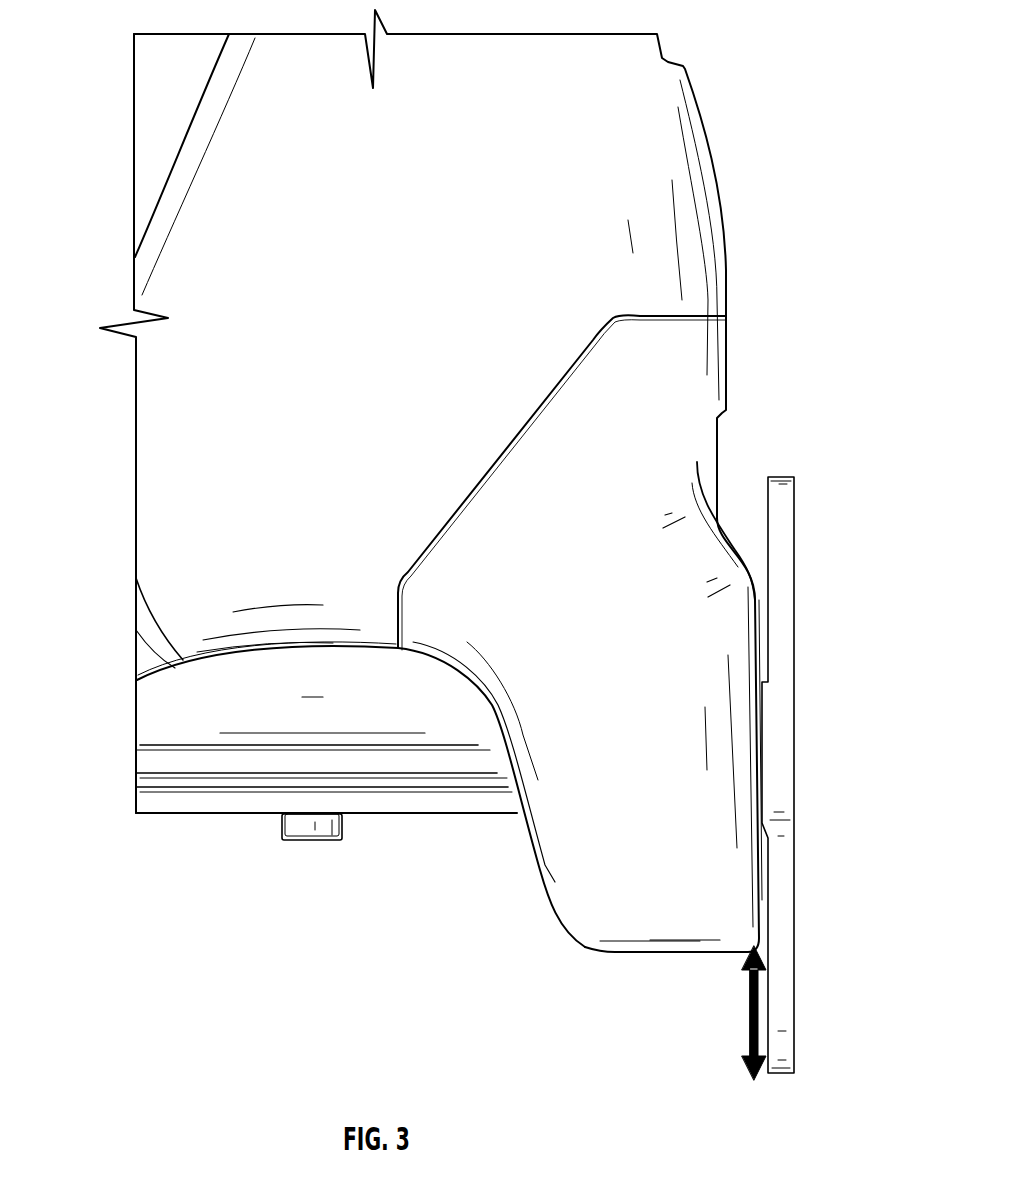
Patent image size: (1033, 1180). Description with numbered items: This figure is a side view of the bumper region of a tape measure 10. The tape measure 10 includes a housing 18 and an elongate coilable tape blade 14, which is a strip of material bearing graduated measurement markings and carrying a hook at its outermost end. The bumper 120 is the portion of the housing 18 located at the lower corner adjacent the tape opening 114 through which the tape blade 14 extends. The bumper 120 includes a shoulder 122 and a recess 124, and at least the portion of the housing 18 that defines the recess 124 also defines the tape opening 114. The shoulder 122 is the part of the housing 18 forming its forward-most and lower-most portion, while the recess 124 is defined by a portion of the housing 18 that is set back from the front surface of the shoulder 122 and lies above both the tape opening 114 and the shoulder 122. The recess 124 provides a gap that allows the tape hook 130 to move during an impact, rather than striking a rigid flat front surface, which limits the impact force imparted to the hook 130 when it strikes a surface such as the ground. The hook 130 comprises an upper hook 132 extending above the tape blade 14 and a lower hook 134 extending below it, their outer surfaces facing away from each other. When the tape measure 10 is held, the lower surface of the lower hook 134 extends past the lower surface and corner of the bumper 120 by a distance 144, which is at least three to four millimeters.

The tape measure 10 is at (108, 290).
The housing 18 is at (108, 533).
The tape blade 14 is at (172, 805).
The bumper 120 is at (598, 600).
The tape opening 114 is at (750, 808).
The recess 124 is at (736, 432).
The shoulder 122 is at (724, 667).
The tape hook 130 is at (847, 755).
The upper hook 132 is at (797, 515).
The lower hook 134 is at (792, 1016).
The distance 144 is at (733, 1028).